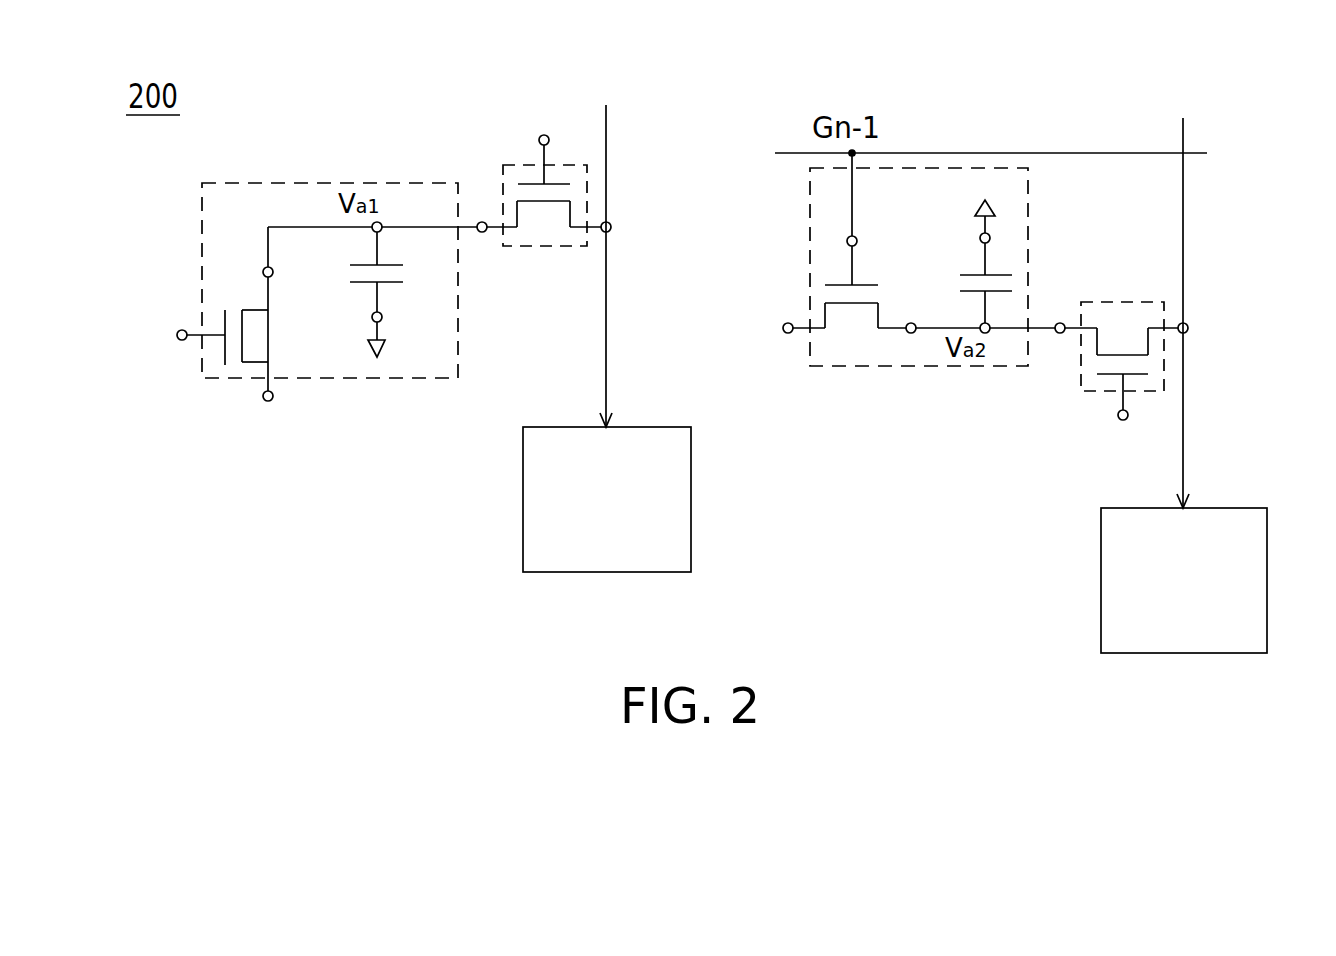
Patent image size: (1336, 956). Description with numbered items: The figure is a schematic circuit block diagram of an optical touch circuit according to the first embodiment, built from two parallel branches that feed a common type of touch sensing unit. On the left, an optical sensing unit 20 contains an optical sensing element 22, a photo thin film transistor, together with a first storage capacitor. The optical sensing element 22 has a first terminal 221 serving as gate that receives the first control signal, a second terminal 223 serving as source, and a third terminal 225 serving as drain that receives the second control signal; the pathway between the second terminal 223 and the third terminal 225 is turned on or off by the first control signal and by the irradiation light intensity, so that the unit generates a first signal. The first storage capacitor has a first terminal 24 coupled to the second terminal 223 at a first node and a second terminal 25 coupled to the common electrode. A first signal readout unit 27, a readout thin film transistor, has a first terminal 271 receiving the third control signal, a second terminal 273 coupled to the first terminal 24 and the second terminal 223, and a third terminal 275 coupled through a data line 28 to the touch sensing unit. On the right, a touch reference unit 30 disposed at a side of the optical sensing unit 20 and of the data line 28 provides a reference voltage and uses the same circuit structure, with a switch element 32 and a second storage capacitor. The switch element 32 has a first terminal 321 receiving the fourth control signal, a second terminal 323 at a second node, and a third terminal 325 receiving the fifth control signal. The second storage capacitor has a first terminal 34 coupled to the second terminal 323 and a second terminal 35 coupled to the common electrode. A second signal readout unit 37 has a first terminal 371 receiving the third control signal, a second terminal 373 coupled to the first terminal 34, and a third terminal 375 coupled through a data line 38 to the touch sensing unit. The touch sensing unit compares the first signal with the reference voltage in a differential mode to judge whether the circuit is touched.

The optical sensing unit 20 is at (415, 382).
The optical sensing element 22 is at (255, 364).
The first terminal of the optical sensing element 221 is at (180, 329).
The second terminal of the optical sensing element 223 is at (263, 272).
The third terminal of the optical sensing element 225 is at (273, 396).
The first terminal of the first storage capacitor 24 is at (377, 222).
The second terminal of the first storage capacitor 25 is at (382, 317).
The first signal readout unit 27 is at (568, 250).
The first terminal of the first signal readout unit 271 is at (549, 140).
The second terminal of the first signal readout unit 273 is at (482, 222).
The third terminal of the first signal readout unit 275 is at (612, 227).
The data line 28 is at (609, 328).
The touch reference unit 30 is at (932, 165).
The switch element 32 is at (835, 283).
The first terminal of the switch element 321 is at (846, 241).
The second terminal of the switch element 323 is at (911, 334).
The third terminal of the switch element 325 is at (784, 323).
The first terminal of the second storage capacitor 34 is at (985, 334).
The second terminal of the second storage capacitor 35 is at (990, 236).
The second signal readout unit 37 is at (1125, 300).
The first terminal of the second signal readout unit 371 is at (1117, 415).
The second terminal of the second signal readout unit 373 is at (1060, 322).
The third terminal of the second signal readout unit 375 is at (1189, 328).
The data line 38 is at (1186, 210).